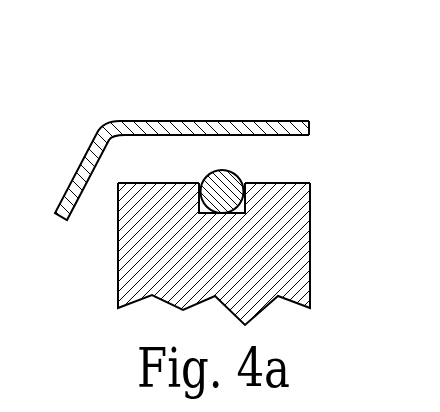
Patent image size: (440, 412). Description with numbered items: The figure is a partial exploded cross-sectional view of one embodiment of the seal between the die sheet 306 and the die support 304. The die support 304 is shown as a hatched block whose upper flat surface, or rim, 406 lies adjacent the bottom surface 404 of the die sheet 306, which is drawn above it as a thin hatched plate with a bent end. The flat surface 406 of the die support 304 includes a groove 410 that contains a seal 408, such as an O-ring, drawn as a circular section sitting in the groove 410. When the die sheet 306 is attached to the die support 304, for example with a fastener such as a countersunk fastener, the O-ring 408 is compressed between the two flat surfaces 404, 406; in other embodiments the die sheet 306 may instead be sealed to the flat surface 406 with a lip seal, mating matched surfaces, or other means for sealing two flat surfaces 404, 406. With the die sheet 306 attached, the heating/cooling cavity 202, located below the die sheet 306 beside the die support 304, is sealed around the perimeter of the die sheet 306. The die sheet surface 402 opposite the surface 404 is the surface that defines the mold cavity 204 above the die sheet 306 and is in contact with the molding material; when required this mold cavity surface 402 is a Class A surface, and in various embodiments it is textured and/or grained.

The heating/cooling cavity 202 is at (109, 278).
The mold cavity 204 is at (60, 167).
The die support 304 is at (310, 208).
The die sheet 306 is at (255, 120).
The die sheet surface 402 is at (86, 148).
The bottom surface 404 is at (309, 136).
The flat surface 406 is at (291, 176).
The seal 408 is at (201, 177).
The groove 410 is at (240, 213).